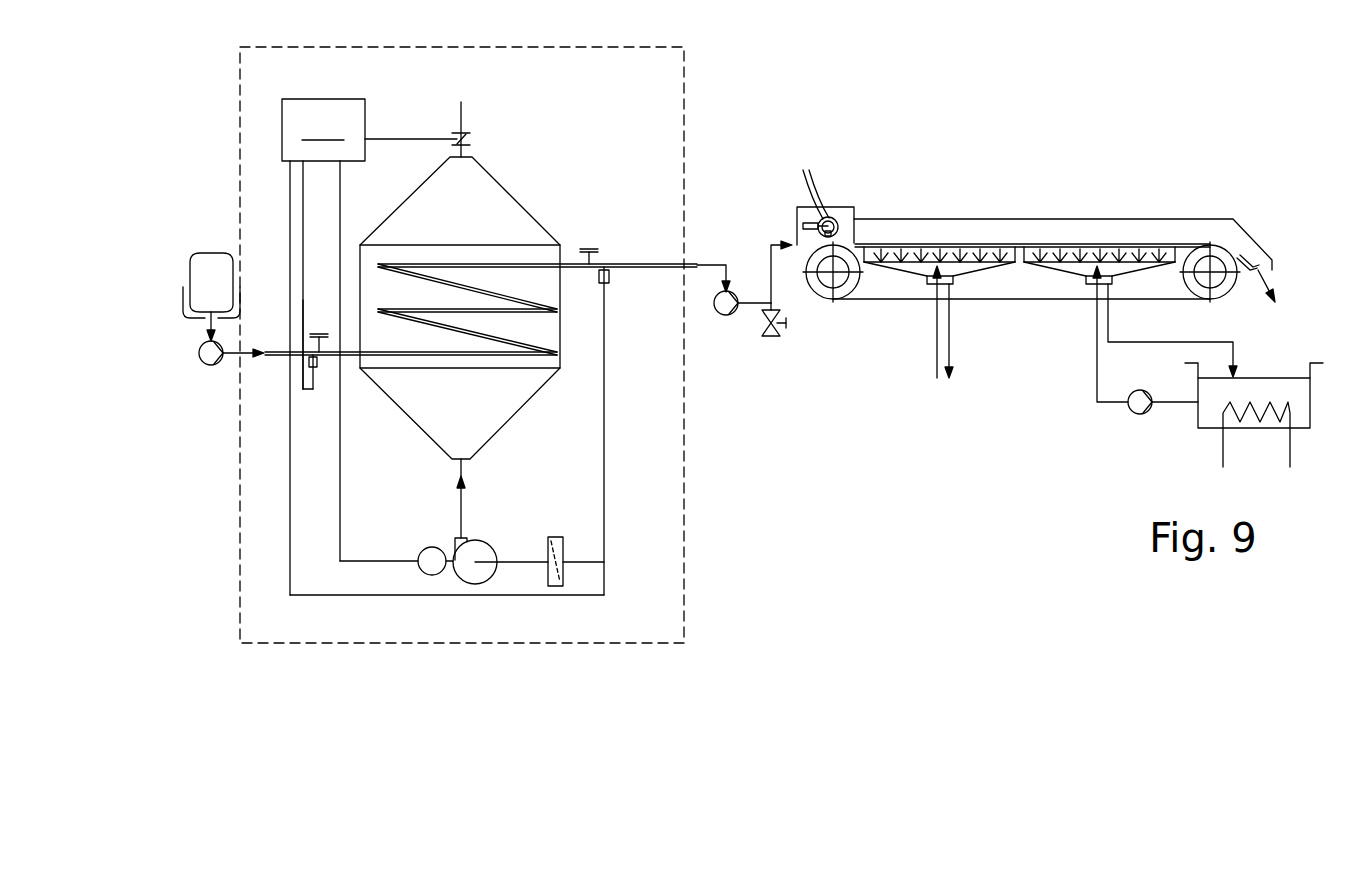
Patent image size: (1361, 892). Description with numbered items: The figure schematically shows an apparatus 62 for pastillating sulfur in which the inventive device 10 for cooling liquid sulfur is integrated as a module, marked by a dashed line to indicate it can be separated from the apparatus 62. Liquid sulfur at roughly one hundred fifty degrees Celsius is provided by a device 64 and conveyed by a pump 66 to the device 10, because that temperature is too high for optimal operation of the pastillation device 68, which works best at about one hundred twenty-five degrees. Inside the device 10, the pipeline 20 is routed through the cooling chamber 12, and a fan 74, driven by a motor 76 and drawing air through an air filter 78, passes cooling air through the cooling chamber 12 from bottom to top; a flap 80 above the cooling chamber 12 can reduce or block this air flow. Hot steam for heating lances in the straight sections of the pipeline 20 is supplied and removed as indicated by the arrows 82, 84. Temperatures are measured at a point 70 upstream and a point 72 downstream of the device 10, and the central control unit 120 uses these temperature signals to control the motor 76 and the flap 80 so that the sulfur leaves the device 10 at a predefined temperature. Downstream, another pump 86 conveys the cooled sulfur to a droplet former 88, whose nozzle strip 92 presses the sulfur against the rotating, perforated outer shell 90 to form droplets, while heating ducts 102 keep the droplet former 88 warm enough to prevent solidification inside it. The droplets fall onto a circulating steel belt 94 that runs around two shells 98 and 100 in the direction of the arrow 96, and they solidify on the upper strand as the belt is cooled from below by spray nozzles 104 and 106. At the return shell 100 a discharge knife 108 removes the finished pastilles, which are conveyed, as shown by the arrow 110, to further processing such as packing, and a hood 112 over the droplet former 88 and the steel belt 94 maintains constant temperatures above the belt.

The device for cooling liquid sulfur 10 is at (467, 317).
The cooling chamber 12 is at (512, 228).
The pipeline 20 is at (393, 353).
The apparatus for pastillating sulfur 62 is at (928, 100).
The device providing liquid sulfur 64 is at (200, 273).
The pump 66 is at (205, 362).
The pastillation device 68 is at (1036, 228).
The temperature sensor 70 is at (315, 382).
The temperature sensor 72 is at (606, 296).
The fan 74 is at (482, 550).
The motor 76 is at (431, 577).
The air filter 78 is at (553, 545).
The flap 80 is at (478, 130).
The arrow indicating hot steam supply 82 is at (325, 318).
The arrow indicating hot steam removal 84 is at (592, 244).
The pump 86 is at (725, 312).
The droplet former 88 is at (836, 192).
The outer shell 90 is at (833, 220).
The nozzle strip 92 is at (838, 235).
The steel belt 94 is at (1189, 245).
The arrow indicating belt direction 96 is at (800, 292).
The shell 98 is at (850, 290).
The return shell 100 is at (1222, 282).
The heating ducts 102 is at (805, 181).
The spray nozzles 104 is at (900, 262).
The spray nozzles 106 is at (1062, 262).
The discharge knife 108 is at (1250, 256).
The arrow indicating pastille conveyance 110 is at (1277, 280).
The hood 112 is at (1038, 218).
The central control unit 120 is at (369, 347).